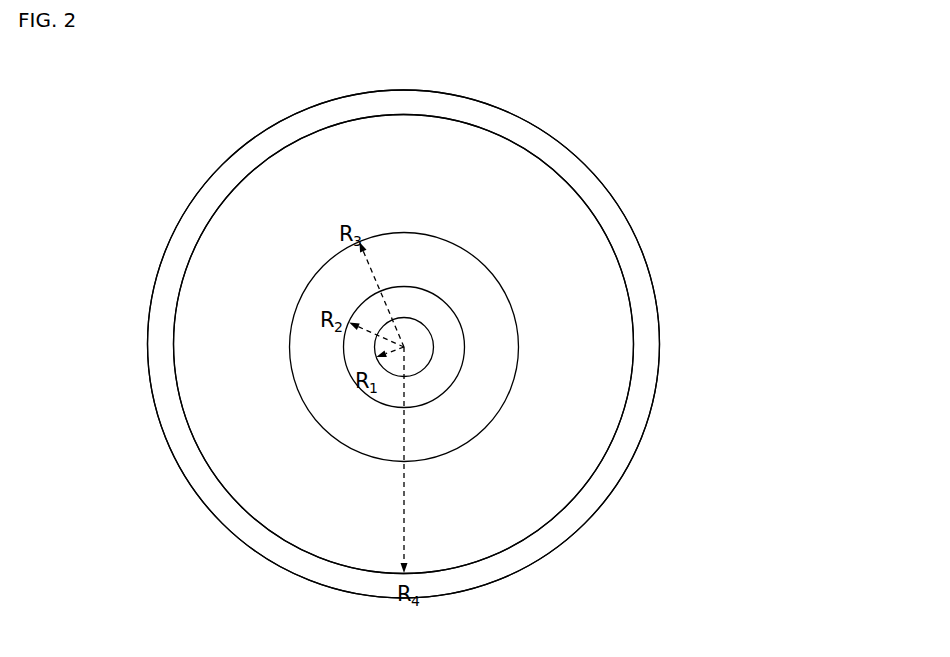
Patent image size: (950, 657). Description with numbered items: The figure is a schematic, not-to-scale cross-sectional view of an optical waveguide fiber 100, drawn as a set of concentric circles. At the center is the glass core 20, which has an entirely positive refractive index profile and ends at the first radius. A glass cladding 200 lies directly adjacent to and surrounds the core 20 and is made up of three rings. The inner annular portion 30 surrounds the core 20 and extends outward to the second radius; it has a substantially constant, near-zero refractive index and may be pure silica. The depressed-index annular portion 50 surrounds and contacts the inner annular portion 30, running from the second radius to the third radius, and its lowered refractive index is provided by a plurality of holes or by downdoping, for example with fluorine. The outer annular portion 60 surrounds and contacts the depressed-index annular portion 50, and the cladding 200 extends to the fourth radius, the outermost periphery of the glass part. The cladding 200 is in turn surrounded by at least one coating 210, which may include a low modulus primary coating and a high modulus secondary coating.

The optical waveguide fiber 100 is at (108, 224).
The core 20 is at (418, 355).
The inner annular portion 30 is at (445, 351).
The depressed-index annular portion 50 is at (465, 309).
The outer annular portion 60 is at (543, 272).
The cladding 200 is at (783, 200).
The coating 210 is at (175, 438).